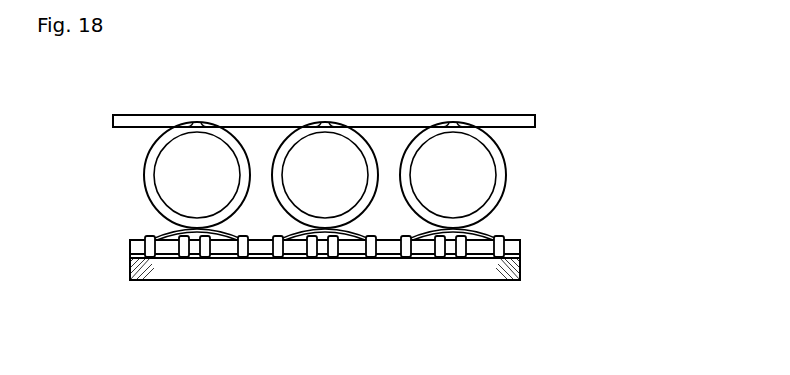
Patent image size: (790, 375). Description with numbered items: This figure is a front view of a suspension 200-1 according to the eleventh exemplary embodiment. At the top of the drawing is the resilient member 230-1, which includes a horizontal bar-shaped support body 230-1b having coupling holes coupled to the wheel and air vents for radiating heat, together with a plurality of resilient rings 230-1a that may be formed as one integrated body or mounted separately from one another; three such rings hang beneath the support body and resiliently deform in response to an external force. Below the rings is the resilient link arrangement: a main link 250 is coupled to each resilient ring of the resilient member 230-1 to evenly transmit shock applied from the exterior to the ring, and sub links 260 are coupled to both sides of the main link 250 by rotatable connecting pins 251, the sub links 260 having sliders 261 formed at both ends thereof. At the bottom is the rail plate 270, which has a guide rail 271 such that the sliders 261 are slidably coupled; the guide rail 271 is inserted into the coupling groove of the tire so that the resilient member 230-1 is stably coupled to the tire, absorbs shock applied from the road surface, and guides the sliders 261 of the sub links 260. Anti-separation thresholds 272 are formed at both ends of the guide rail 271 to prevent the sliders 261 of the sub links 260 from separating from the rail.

The suspension 200-1 is at (357, 365).
The resilient member 230-1 is at (541, 133).
The resilient rings 230-1a is at (143, 182).
The horizontal bar-shaped support body 230-1b is at (322, 116).
The main link 250 is at (228, 258).
The rotatable connecting pins 251 is at (425, 258).
The sub links 260 is at (291, 258).
The sliders 261 is at (384, 258).
The rail plate 270 is at (176, 272).
The guide rail 271 is at (485, 258).
The anti-separation thresholds 272 is at (128, 250).